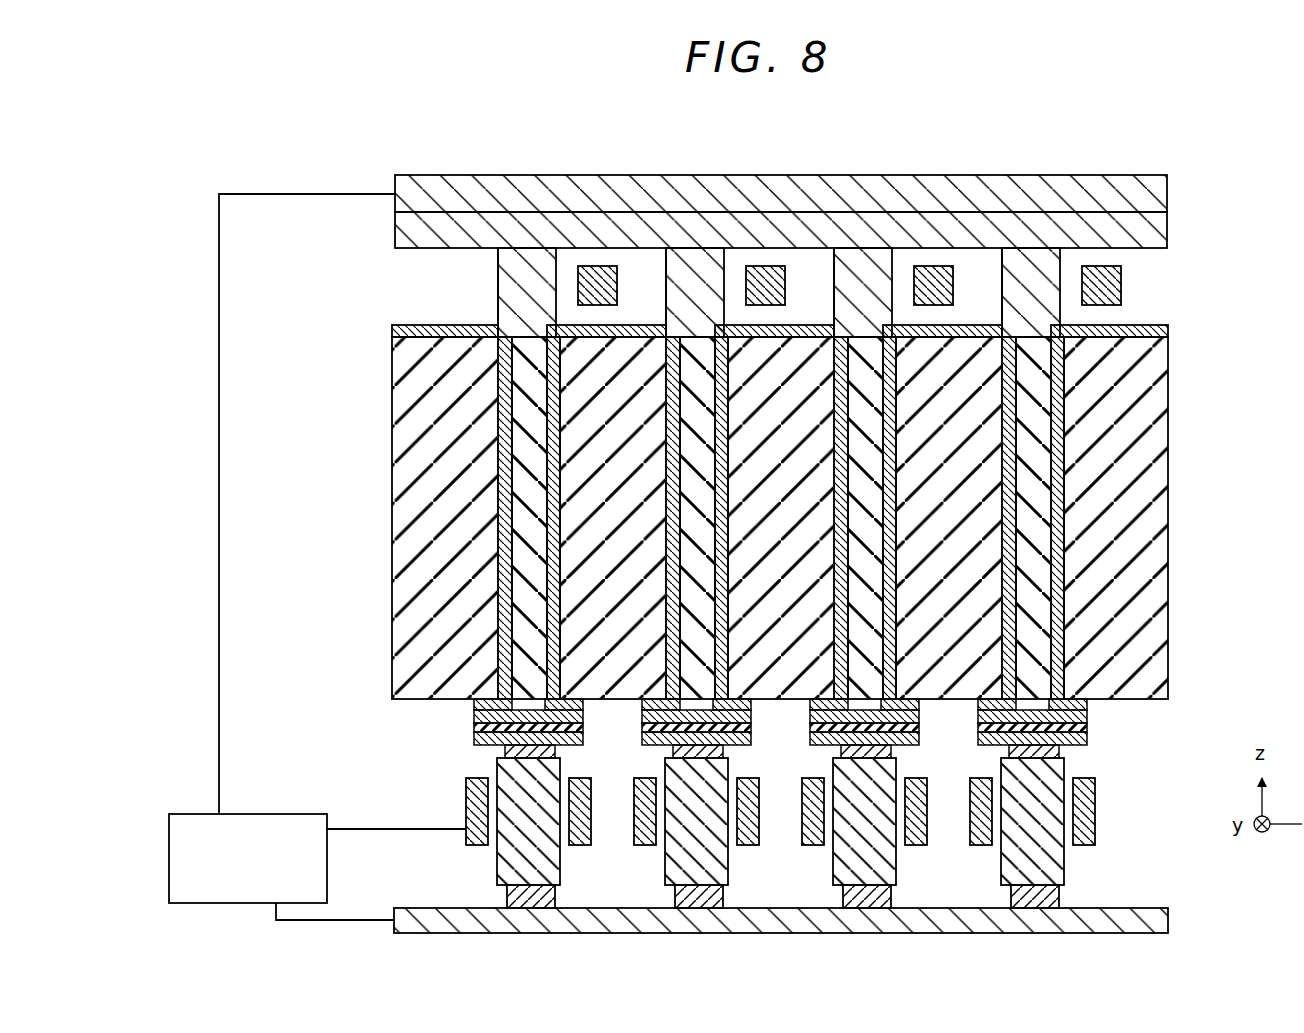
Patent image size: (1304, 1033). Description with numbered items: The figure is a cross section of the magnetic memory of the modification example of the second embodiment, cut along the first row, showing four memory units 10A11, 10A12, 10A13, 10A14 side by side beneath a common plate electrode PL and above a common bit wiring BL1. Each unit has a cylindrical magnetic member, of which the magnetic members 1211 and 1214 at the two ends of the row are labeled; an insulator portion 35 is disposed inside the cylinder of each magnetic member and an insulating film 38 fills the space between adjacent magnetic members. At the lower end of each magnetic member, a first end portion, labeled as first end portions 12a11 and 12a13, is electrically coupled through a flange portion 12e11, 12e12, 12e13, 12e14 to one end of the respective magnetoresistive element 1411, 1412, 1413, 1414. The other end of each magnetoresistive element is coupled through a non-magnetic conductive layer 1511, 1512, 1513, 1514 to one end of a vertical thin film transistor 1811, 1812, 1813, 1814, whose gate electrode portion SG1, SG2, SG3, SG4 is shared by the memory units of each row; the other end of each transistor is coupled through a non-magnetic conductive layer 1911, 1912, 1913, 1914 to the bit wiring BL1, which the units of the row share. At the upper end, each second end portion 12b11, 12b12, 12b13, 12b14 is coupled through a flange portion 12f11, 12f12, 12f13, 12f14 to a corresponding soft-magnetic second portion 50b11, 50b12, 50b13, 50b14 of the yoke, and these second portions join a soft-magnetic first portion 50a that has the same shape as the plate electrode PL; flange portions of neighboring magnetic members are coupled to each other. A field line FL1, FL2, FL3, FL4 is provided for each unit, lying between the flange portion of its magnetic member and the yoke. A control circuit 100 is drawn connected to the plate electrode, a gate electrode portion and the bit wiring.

The plate electrode PL is at (1167, 187).
The first portion of the yoke 50a is at (1165, 230).
The second portion of the yoke 50b11 is at (536, 262).
The second portion of the yoke 50b12 is at (704, 262).
The second portion of the yoke 50b13 is at (872, 262).
The second portion of the yoke 50b14 is at (1040, 262).
The second end portion 12b11 is at (506, 322).
The second end portion 12b12 is at (674, 322).
The second end portion 12b13 is at (842, 322).
The second end portion 12b14 is at (1010, 322).
The flange portion 12f11 is at (567, 323).
The flange portion 12f12 is at (735, 323).
The flange portion 12f13 is at (903, 323).
The flange portion 12f14 is at (1071, 323).
The field line FL1 is at (604, 286).
The field line FL2 is at (772, 286).
The field line FL3 is at (940, 286).
The field line FL4 is at (1108, 286).
The insulator portion 35 is at (520, 408).
The insulating film 38 is at (576, 447).
The magnetic member 1211 is at (510, 485).
The magnetic member 1214 is at (1051, 485).
The memory unit 10A11 is at (492, 528).
The memory unit 10A12 is at (660, 528).
The memory unit 10A13 is at (828, 528).
The memory unit 10A14 is at (996, 528).
The first end portion 12a11 is at (498, 696).
The first end portion 12a13 is at (834, 696).
The flange portion 12e11 is at (477, 712).
The flange portion 12e12 is at (645, 712).
The flange portion 12e13 is at (813, 712).
The flange portion 12e14 is at (981, 712).
The magnetoresistive element 1411 is at (472, 730).
The magnetoresistive element 1412 is at (640, 730).
The magnetoresistive element 1413 is at (808, 730).
The magnetoresistive element 1414 is at (976, 730).
The non-magnetic conductive layer 1511 is at (506, 751).
The non-magnetic conductive layer 1512 is at (674, 751).
The non-magnetic conductive layer 1513 is at (842, 751).
The non-magnetic conductive layer 1514 is at (1010, 751).
The gate electrode portion SG1 is at (465, 812).
The gate electrode portion SG2 is at (633, 812).
The gate electrode portion SG3 is at (801, 812).
The gate electrode portion SG4 is at (969, 812).
The vertical thin film transistor 1811 is at (506, 863).
The vertical thin film transistor 1812 is at (674, 863).
The vertical thin film transistor 1813 is at (842, 863).
The vertical thin film transistor 1814 is at (1010, 863).
The non-magnetic conductive layer 1911 is at (507, 891).
The non-magnetic conductive layer 1912 is at (675, 891).
The non-magnetic conductive layer 1913 is at (843, 891).
The non-magnetic conductive layer 1914 is at (1011, 891).
The bit wiring BL1 is at (1168, 916).
The control circuit 100 is at (188, 813).